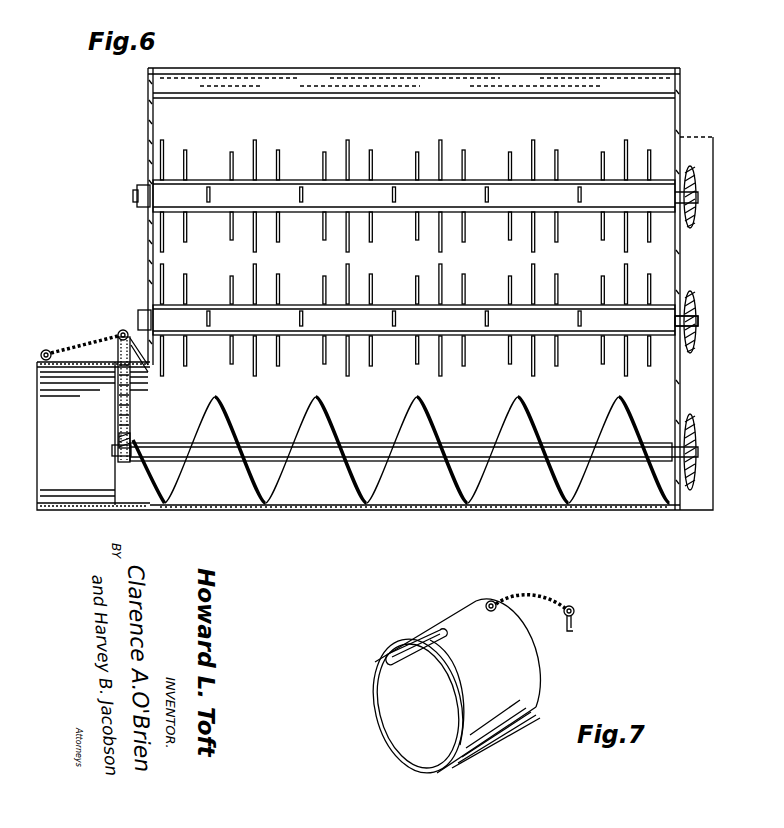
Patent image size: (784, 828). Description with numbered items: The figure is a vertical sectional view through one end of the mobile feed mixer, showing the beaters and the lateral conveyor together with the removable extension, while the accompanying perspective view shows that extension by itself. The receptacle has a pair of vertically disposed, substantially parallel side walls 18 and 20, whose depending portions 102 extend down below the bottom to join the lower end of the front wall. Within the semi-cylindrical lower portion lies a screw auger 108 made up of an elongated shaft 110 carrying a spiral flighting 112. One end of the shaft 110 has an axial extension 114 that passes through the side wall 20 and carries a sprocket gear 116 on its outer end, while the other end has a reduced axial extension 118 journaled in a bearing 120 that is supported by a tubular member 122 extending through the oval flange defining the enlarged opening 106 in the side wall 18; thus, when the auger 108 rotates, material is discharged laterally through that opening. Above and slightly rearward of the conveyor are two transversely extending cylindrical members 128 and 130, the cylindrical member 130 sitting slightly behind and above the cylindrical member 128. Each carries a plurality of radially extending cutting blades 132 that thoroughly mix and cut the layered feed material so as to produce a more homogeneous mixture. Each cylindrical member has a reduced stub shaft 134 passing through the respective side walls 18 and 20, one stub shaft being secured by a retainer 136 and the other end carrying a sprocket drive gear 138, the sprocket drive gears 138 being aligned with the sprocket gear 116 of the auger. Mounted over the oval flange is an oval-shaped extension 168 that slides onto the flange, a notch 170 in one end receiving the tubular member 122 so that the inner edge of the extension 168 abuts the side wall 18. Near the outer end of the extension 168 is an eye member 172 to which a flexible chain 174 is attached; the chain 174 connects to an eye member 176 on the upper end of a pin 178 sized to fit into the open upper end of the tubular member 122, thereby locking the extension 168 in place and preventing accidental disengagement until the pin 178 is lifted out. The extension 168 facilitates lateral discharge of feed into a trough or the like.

In FIG. 6, the side wall 18 is at (150, 138).
In FIG. 6, the side wall 20 is at (680, 118).
In FIG. 6, the depending portions of the side walls 102 is at (680, 505).
In FIG. 6, the enlarged opening 106 is at (146, 368).
In FIG. 6, the screw auger 108 is at (633, 409).
In FIG. 6, the shaft 110 is at (512, 461).
In FIG. 6, the spiral flighting 112 is at (532, 412).
In FIG. 6, the axial extension 114 is at (699, 452).
In FIG. 6, the sprocket gear 116 is at (694, 423).
In FIG. 6, the reduced axial extension 118 is at (113, 453).
In FIG. 6, the bearing 120 is at (118, 440).
In FIG. 6, the tubular member 122 is at (119, 392).
In FIG. 6, the cylindrical member 128 is at (400, 331).
In FIG. 6, the cylindrical member 130 is at (380, 185).
In FIG. 6, the cutting blades 132 is at (466, 160).
In FIG. 6, the reduced stub shaft 134 is at (699, 322).
In FIG. 6, the retainer 136 is at (138, 210).
In FIG. 6, the sprocket drive gear 138 is at (696, 175).
In FIG. 6, the oval-shaped extension 168 is at (88, 512).
In FIG. 7, the oval-shaped extension 168 is at (534, 698).
In FIG. 7, the notch 170 is at (376, 663).
In FIG. 6, the eye member 172 is at (47, 350).
In FIG. 7, the eye member 172 is at (492, 601).
In FIG. 6, the flexible chain 174 is at (81, 340).
In FIG. 7, the flexible chain 174 is at (533, 593).
In FIG. 7, the eye member 176 is at (575, 607).
In FIG. 7, the pin 178 is at (576, 631).